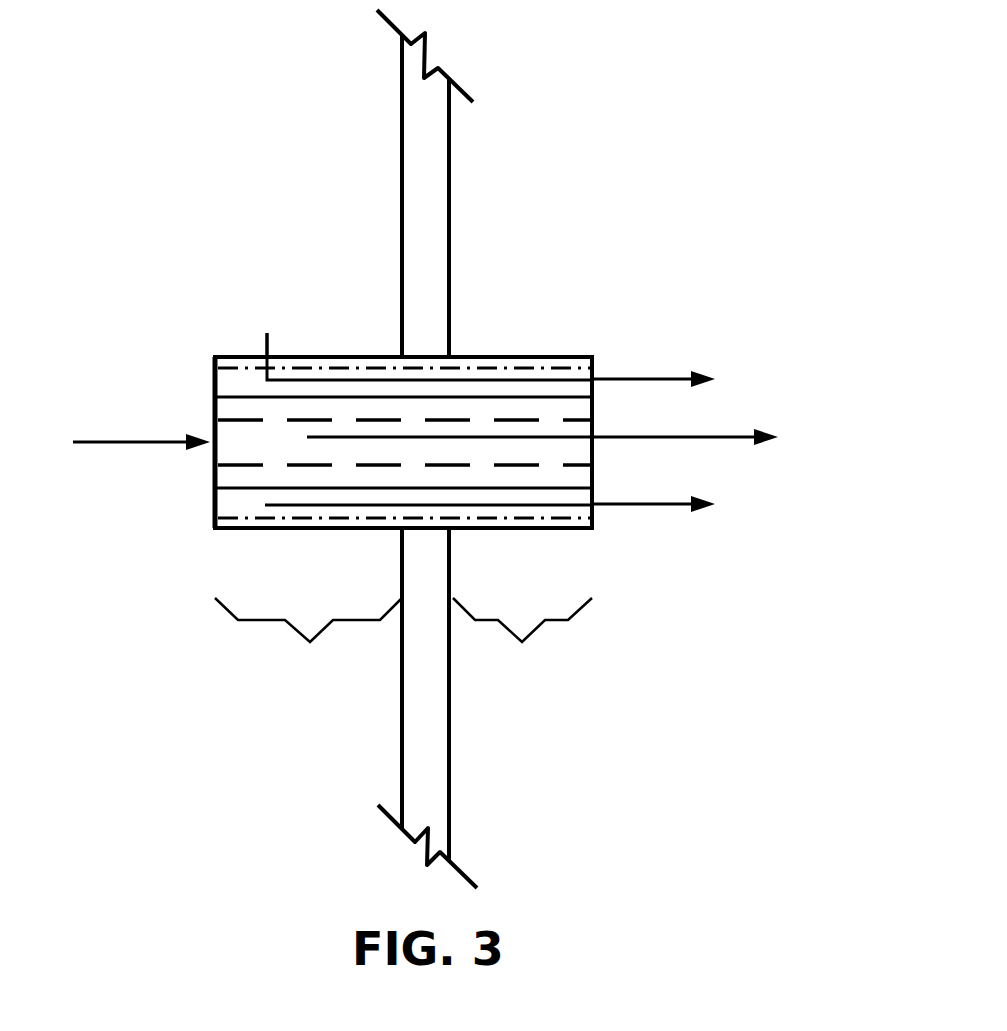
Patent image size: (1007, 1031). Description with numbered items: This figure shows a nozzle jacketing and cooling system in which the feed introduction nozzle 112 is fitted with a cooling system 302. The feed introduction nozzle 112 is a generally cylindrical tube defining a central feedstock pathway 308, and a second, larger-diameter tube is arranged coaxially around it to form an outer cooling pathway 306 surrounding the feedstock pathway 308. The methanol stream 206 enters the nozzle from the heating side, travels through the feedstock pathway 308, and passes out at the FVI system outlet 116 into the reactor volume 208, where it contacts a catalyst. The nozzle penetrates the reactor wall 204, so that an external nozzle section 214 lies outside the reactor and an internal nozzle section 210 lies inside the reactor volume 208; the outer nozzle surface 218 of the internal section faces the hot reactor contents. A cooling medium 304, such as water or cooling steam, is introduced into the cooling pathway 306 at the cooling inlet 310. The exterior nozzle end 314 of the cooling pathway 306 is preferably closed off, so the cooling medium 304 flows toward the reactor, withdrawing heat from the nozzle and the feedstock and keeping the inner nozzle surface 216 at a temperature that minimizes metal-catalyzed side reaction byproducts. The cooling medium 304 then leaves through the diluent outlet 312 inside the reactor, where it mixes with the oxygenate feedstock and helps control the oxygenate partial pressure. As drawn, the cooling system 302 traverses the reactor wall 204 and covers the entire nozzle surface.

The feed introduction nozzle 112 is at (213, 378).
The FVI system outlet 116 is at (592, 458).
The reactor wall 204 is at (428, 735).
The methanol stream 206 is at (107, 442).
The reactor volume 208 is at (923, 449).
The internal nozzle section 210 is at (522, 646).
The external nozzle section 214 is at (308, 646).
The inner nozzle surface 216 is at (472, 418).
The outer nozzle surface 218 is at (253, 490).
The cooling system 302 is at (582, 320).
The cooling medium 304 is at (345, 368).
The cooling pathway 306 is at (537, 371).
The feedstock pathway 308 is at (241, 448).
The cooling inlet 310 is at (275, 357).
The diluent outlet 312 is at (594, 510).
The exterior nozzle end 314 is at (238, 408).